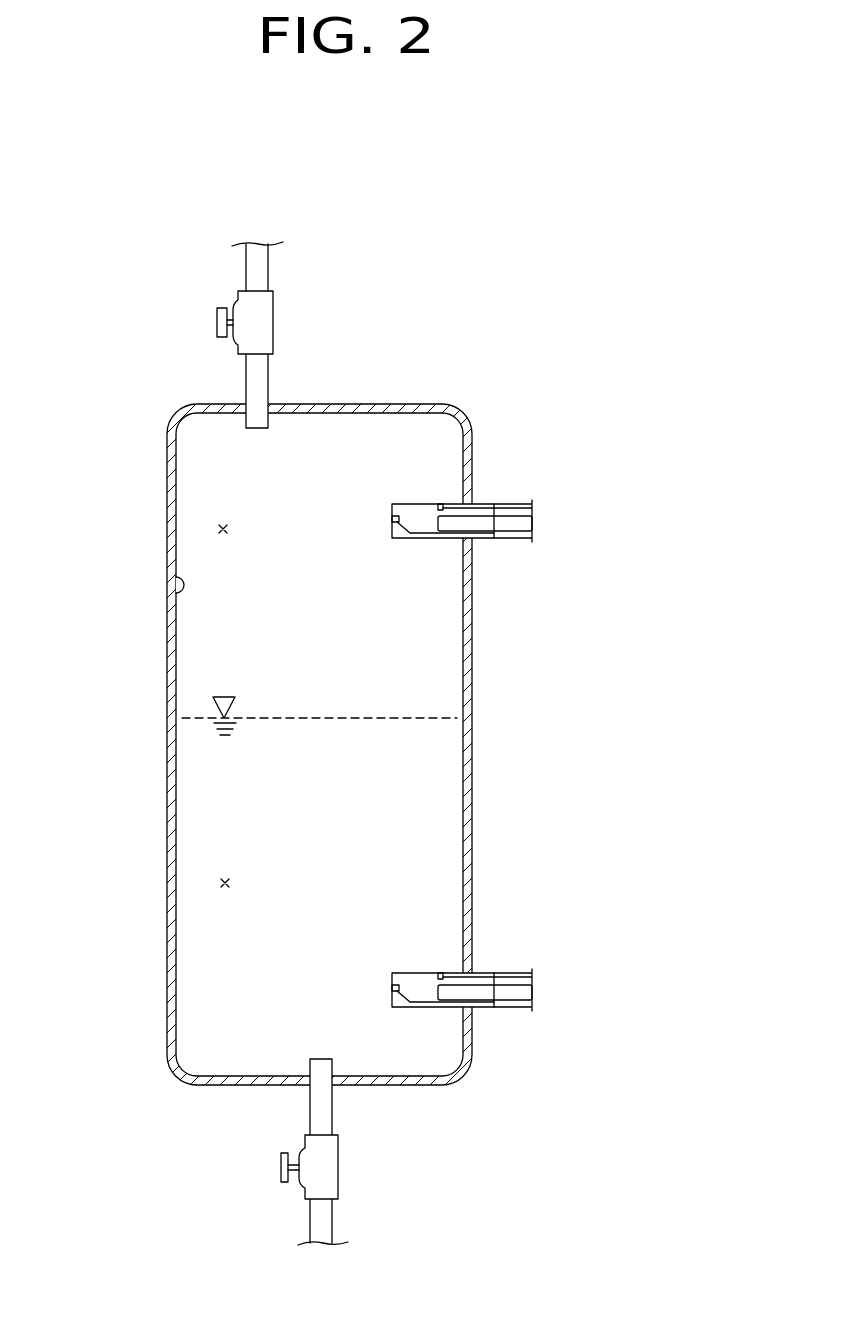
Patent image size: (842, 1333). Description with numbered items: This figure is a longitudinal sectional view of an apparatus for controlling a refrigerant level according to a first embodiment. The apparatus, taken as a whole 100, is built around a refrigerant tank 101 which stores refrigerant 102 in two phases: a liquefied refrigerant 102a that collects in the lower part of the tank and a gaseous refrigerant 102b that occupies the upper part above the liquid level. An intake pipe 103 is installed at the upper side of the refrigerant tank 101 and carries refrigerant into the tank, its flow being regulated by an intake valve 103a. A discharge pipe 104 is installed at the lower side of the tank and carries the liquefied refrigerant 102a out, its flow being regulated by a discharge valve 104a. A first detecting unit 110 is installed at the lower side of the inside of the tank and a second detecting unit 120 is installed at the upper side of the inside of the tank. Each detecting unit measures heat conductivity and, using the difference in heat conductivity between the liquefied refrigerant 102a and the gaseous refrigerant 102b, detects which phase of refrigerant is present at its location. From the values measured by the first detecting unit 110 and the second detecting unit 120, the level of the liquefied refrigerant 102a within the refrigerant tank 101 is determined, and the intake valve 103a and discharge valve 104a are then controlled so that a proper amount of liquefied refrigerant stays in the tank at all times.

The water tank assembly 100 is at (401, 743).
The refrigerant tank 101 is at (167, 660).
The sensor mounting portion 102 is at (168, 596).
The liquefied refrigerant 102a is at (223, 882).
The gaseous refrigerant 102b is at (221, 528).
The intake pipe 103 is at (252, 380).
The intake valve 103a is at (253, 300).
The discharge pipe 104 is at (317, 1114).
The discharge valve 104a is at (316, 1183).
The first detecting unit 110 is at (538, 988).
The second detecting unit 120 is at (560, 513).